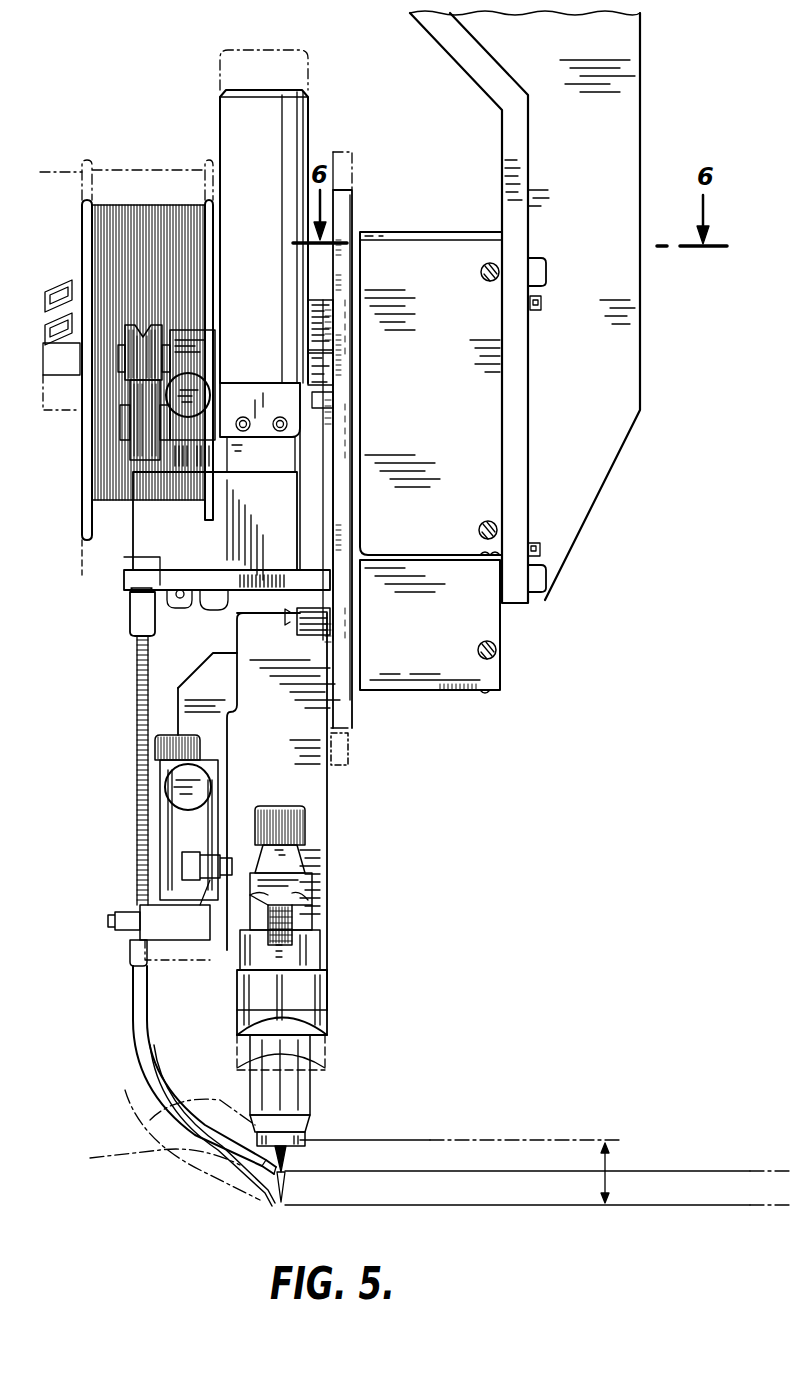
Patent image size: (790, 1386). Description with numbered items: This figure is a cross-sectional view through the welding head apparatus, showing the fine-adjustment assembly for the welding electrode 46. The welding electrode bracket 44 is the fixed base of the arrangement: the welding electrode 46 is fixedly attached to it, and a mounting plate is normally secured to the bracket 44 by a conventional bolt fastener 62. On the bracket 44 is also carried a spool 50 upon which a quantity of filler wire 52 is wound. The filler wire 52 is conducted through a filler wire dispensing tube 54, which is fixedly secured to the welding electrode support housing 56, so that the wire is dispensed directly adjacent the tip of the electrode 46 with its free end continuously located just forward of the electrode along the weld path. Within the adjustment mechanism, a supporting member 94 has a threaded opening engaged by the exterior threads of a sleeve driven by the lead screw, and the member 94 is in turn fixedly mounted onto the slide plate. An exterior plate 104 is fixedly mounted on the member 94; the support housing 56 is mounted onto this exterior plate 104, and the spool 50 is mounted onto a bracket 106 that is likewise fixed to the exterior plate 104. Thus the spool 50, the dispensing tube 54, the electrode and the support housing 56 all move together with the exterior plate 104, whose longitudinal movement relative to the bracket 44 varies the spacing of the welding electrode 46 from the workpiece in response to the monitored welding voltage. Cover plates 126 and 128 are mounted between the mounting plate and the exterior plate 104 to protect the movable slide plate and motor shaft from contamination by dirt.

The welding electrode bracket 44 is at (625, 102).
The welding electrode 46 is at (282, 1170).
The spool 50 is at (82, 210).
The filler wire 52 is at (118, 207).
The filler wire dispensing tube 54 is at (180, 1140).
The welding electrode support housing 56 is at (305, 777).
The bolt fastener 62 is at (546, 280).
The supporting member 94 is at (352, 398).
The exterior plate 104 is at (340, 715).
The bracket 106 is at (330, 330).
The cover plate 126 is at (447, 652).
The cover plate 128 is at (478, 492).